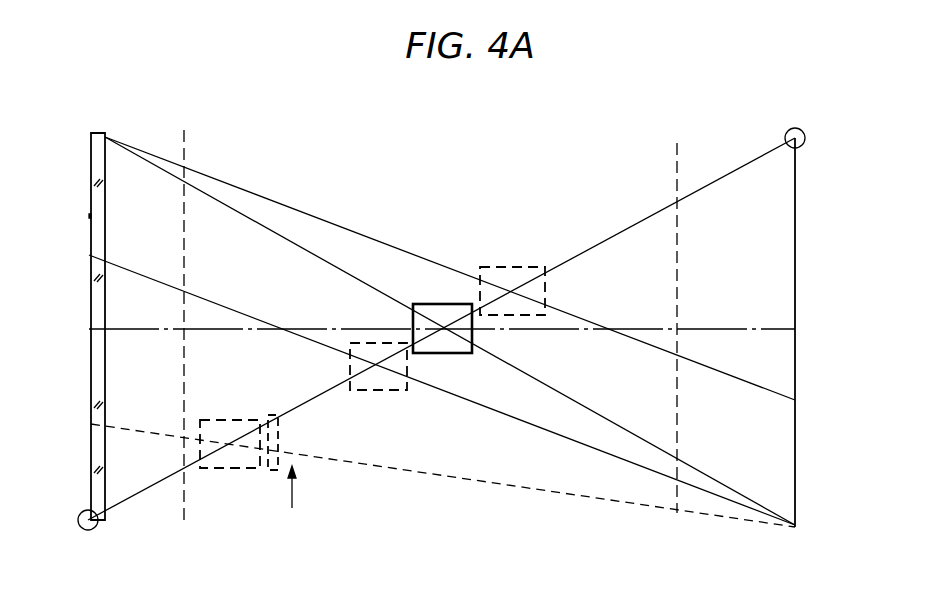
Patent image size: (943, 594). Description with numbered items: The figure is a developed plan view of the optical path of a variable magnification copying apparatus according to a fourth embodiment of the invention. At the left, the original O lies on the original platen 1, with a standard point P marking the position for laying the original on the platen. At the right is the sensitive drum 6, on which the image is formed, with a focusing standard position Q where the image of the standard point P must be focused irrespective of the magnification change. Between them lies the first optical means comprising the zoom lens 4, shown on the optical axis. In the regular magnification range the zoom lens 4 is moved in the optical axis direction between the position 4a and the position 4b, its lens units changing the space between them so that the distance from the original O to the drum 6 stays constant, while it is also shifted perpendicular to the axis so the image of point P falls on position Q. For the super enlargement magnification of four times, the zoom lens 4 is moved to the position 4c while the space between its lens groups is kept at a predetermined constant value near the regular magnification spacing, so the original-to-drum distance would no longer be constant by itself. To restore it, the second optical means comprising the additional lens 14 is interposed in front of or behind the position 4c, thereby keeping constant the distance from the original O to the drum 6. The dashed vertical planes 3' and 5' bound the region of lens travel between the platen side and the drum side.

The original platen 1 is at (96, 133).
The original O is at (89, 217).
The front virtual plane 3' is at (207, 312).
The zoom lens 4 is at (433, 304).
The position of zoom lens 4a is at (384, 392).
The position of zoom lens 4b is at (517, 267).
The position of zoom lens at super enlargement magnification 4c is at (219, 470).
The rear virtual plane 5' is at (701, 307).
The sensitive drum 6 is at (797, 288).
The additional lens 14 is at (272, 472).
The standard point P is at (84, 529).
The focusing standard position Q is at (800, 130).